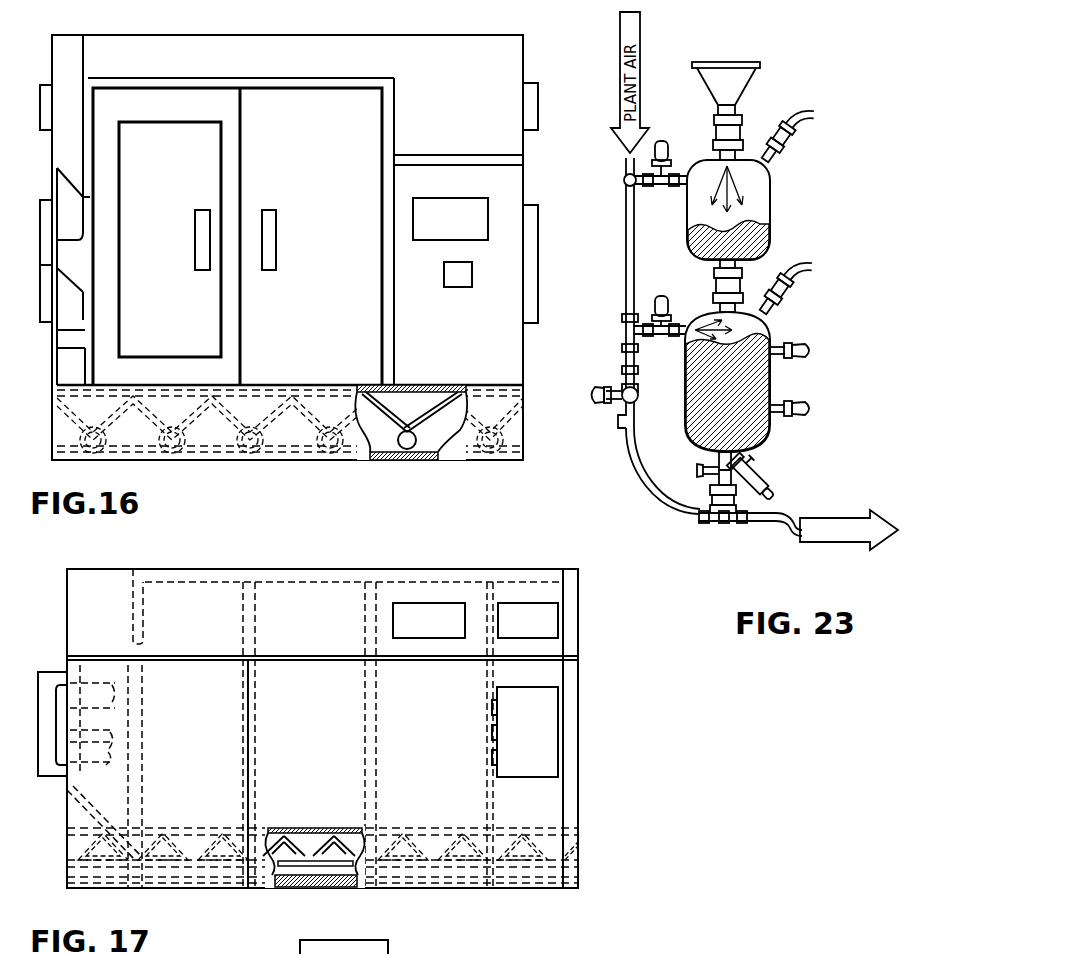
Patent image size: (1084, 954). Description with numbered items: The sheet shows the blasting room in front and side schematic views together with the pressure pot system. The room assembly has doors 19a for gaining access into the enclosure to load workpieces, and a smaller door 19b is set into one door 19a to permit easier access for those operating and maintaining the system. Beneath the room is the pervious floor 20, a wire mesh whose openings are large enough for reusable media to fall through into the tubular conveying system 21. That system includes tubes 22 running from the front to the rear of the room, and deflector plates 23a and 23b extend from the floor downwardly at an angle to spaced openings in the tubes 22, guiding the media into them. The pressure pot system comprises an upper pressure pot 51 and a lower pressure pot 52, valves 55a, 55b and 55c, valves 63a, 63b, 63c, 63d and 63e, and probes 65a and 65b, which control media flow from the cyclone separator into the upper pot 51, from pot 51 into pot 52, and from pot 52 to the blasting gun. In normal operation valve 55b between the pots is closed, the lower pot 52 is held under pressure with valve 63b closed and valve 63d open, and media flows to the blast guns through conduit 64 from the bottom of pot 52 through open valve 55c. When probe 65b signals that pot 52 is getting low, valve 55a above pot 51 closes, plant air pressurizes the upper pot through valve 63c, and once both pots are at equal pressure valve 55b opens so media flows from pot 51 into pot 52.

In FIG. 16, the doors 19a is at (322, 115).
In FIG. 16, the smaller door 19b is at (172, 140).
In FIG. 16, the pervious floor 20 is at (420, 420).
In FIG. 17, the pervious floor 20 is at (285, 828).
In FIG. 16, the tubular conveying system 21 is at (293, 428).
In FIG. 17, the tubular conveying system 21 is at (165, 890).
In FIG. 16, the tubes 22 is at (230, 450).
In FIG. 17, the tubes 22 is at (322, 888).
In FIG. 16, the deflector plate 23a is at (395, 420).
In FIG. 17, the deflector plate 23a is at (433, 840).
In FIG. 16, the deflector plate 23b is at (327, 405).
In FIG. 17, the deflector plate 23b is at (298, 840).
In FIG. 23, the upper pressure pot 51 is at (765, 208).
In FIG. 23, the lower pressure pot 52 is at (685, 412).
In FIG. 23, the valve 55a is at (738, 112).
In FIG. 23, the valve 55b is at (758, 272).
In FIG. 23, the valve 55c is at (710, 498).
In FIG. 23, the valve 63a is at (785, 152).
In FIG. 23, the valve 63b is at (785, 305).
In FIG. 23, the valve 63c is at (658, 137).
In FIG. 23, the valve 63d is at (658, 296).
In FIG. 23, the valve 63e is at (615, 397).
In FIG. 23, the conduit 64 is at (772, 530).
In FIG. 23, the probe 65a is at (814, 350).
In FIG. 23, the probe 65b is at (814, 408).